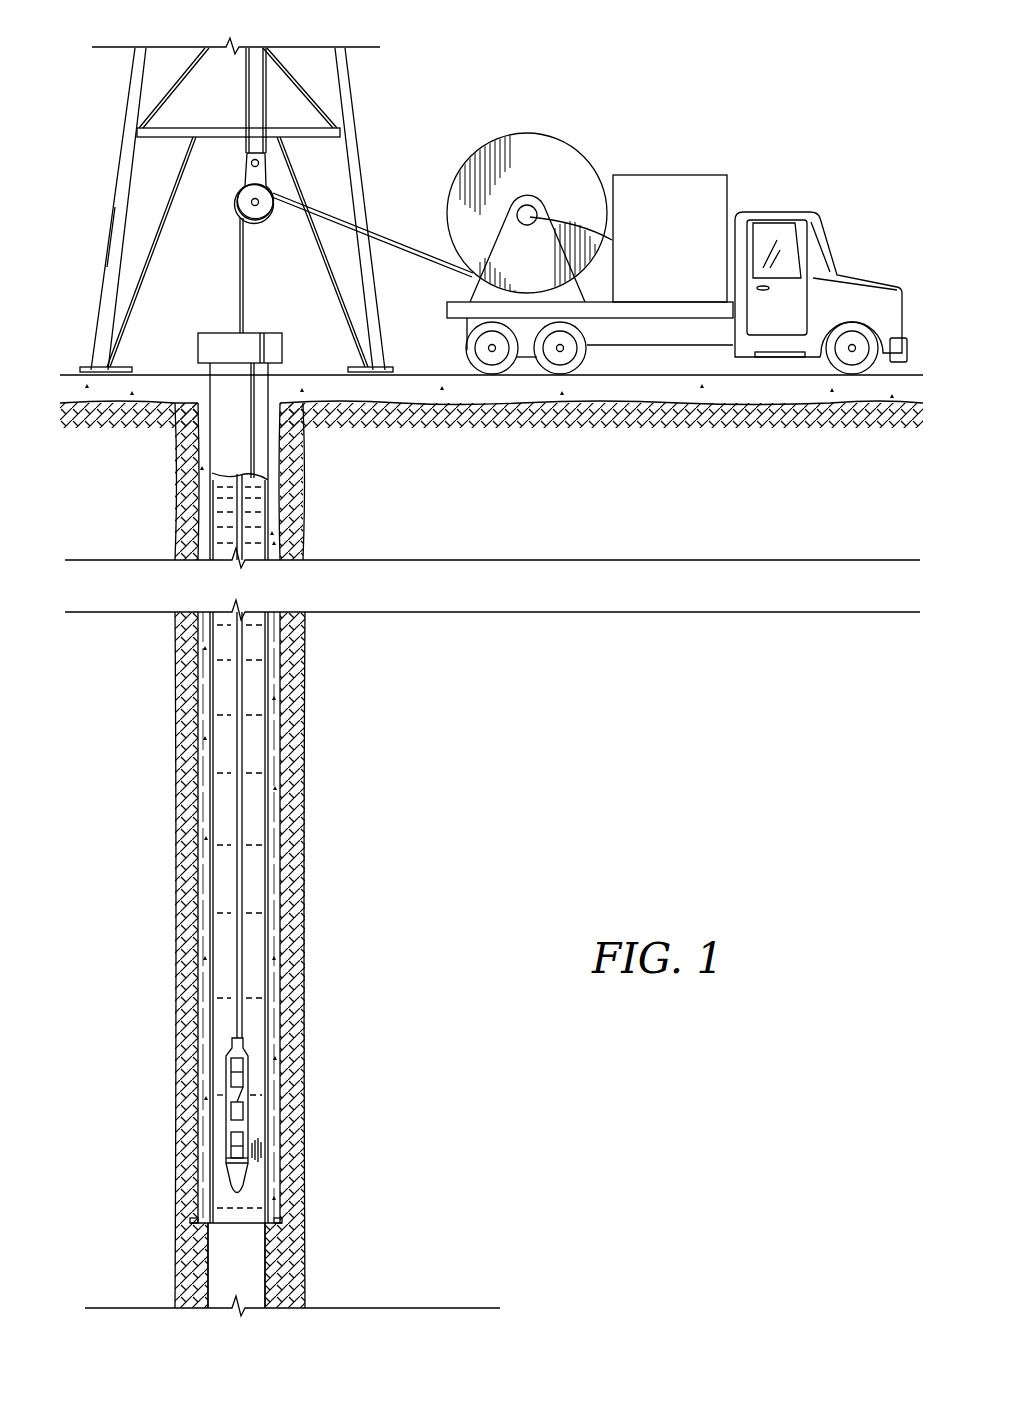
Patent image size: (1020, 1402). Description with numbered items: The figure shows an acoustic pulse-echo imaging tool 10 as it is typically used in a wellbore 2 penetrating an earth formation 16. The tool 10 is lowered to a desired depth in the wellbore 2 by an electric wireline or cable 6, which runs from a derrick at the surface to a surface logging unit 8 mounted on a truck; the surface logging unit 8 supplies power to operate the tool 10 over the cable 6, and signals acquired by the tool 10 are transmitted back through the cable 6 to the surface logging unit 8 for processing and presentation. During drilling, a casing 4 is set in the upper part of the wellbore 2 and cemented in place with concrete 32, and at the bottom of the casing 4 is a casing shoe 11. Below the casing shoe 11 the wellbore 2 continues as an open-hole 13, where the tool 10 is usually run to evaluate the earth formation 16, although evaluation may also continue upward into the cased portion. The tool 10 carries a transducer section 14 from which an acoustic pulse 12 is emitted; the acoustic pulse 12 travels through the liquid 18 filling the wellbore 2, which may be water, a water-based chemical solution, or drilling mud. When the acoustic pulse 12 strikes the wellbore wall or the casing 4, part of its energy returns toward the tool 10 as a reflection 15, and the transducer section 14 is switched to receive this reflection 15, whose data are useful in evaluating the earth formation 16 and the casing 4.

The wellbore 2 is at (217, 860).
The casing 4 is at (212, 782).
The electric wireline or cable 6 is at (237, 698).
The surface logging unit 8 is at (667, 175).
The acoustic pulse-echo imaging tool 10 is at (230, 1060).
The casing shoe 11 is at (198, 1222).
The acoustic pulse 12 is at (262, 1153).
The open-hole 13 is at (235, 1262).
The transducer section 14 is at (227, 1143).
The reflection 15 is at (253, 1163).
The earth formation 16 is at (381, 909).
The liquid 18 is at (225, 933).
The concrete 32 is at (203, 987).